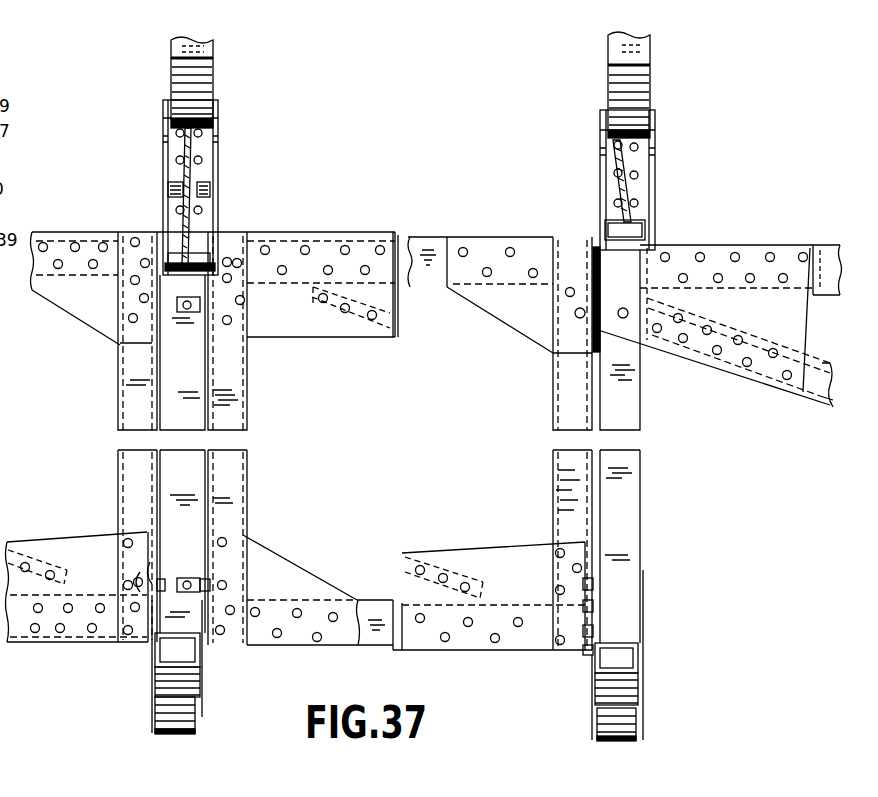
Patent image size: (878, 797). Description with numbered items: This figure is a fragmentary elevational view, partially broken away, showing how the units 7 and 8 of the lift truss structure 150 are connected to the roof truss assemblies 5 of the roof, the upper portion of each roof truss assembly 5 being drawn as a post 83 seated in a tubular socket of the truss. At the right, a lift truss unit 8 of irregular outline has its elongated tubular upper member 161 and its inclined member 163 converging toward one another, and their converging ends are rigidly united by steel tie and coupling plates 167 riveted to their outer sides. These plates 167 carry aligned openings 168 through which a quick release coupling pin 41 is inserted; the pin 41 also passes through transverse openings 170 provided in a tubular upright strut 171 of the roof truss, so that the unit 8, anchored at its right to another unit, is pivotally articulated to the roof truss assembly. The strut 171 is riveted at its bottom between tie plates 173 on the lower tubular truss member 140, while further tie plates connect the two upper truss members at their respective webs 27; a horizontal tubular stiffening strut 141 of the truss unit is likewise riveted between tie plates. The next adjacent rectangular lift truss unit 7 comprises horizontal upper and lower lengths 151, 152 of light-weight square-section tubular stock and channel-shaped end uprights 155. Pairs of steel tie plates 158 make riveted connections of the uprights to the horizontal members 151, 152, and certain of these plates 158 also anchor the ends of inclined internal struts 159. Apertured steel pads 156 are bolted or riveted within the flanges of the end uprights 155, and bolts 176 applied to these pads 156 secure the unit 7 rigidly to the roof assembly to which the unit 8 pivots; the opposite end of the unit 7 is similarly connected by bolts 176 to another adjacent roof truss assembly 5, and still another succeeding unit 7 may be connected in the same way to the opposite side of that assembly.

The roof truss assembly 5 is at (228, 125).
The rectangular lift truss unit 7 is at (80, 230).
The lift truss unit 8 is at (747, 243).
The web 27 is at (193, 173).
The quick release coupling pin 41 is at (600, 298).
The wooden post 83 is at (197, 128).
The lower tubular truss member 140 is at (193, 732).
The horizontal tubular stiffening strut 141 is at (170, 668).
The lift truss structure 150 is at (393, 217).
The upper horizontal length 151 is at (45, 302).
The lower horizontal length 152 is at (57, 643).
The end upright 155 is at (120, 453).
The apertured steel pad 156 is at (238, 315).
The steel tie plate 158 is at (78, 310).
The inclined internal strut 159 is at (395, 335).
The upper horizontal member 161 is at (827, 247).
The inclined member 163 is at (827, 405).
The tie and coupling plate 167 is at (797, 325).
The aligned opening 168 is at (623, 320).
The transverse opening 170 is at (187, 306).
The tubular upright strut 171 is at (195, 477).
The tie plate 173 is at (200, 687).
The bolt 176 is at (220, 268).